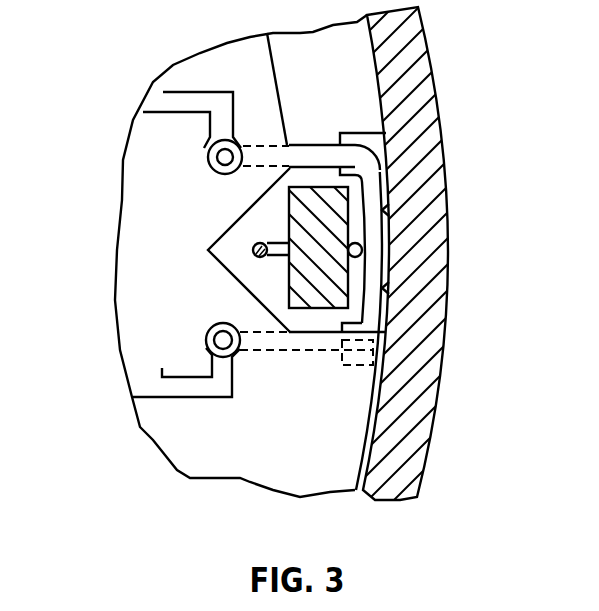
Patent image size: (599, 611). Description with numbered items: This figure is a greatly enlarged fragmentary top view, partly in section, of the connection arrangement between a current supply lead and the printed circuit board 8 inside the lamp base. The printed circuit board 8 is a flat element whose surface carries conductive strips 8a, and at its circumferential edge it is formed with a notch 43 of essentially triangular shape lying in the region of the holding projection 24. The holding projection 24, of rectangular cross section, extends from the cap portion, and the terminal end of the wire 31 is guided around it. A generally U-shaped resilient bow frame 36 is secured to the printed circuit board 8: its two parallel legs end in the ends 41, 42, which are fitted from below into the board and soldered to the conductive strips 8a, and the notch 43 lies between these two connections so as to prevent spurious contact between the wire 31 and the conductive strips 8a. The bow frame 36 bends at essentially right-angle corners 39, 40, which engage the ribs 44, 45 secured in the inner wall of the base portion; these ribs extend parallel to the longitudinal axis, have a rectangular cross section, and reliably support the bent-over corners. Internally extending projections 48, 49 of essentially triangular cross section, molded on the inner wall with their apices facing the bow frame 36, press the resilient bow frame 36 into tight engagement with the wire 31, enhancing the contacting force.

The printed circuit board 8 is at (227, 415).
The conductive strips 8a is at (163, 90).
The holding projection 24 is at (320, 204).
The wire 31 is at (368, 254).
The bow frame 36 is at (373, 230).
The right-angle corner 39 is at (380, 330).
The right-angle corner 40 is at (387, 157).
The leg end 41 is at (206, 339).
The leg end 42 is at (208, 154).
The notch 43 is at (240, 257).
The rib 44 is at (380, 332).
The rib 45 is at (372, 143).
The engagement projection 48 is at (385, 288).
The engagement projection 49 is at (385, 210).